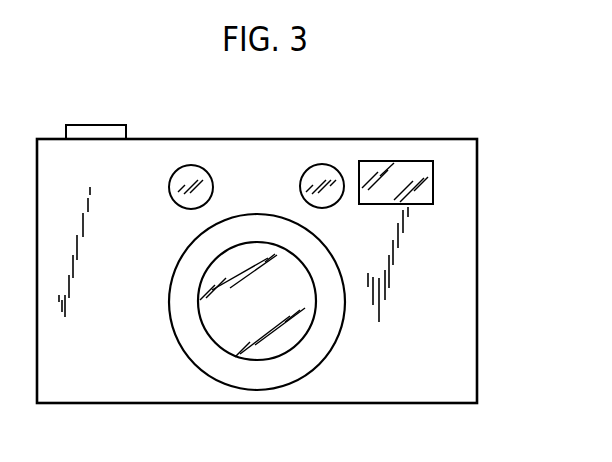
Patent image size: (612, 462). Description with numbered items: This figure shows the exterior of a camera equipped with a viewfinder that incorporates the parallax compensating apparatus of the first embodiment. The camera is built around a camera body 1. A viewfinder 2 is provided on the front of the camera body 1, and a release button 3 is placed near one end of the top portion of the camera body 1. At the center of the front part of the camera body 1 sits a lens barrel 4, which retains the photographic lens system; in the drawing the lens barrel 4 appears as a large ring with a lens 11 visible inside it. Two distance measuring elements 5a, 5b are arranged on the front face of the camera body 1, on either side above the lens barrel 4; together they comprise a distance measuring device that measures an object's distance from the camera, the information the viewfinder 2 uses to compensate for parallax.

The camera body 1 is at (452, 306).
The viewfinder 2 is at (410, 161).
The release button 3 is at (124, 125).
The lens barrel 4 is at (268, 391).
The distance measuring element 5a is at (194, 165).
The distance measuring element 5b is at (330, 165).
The taking lens 11 is at (232, 353).